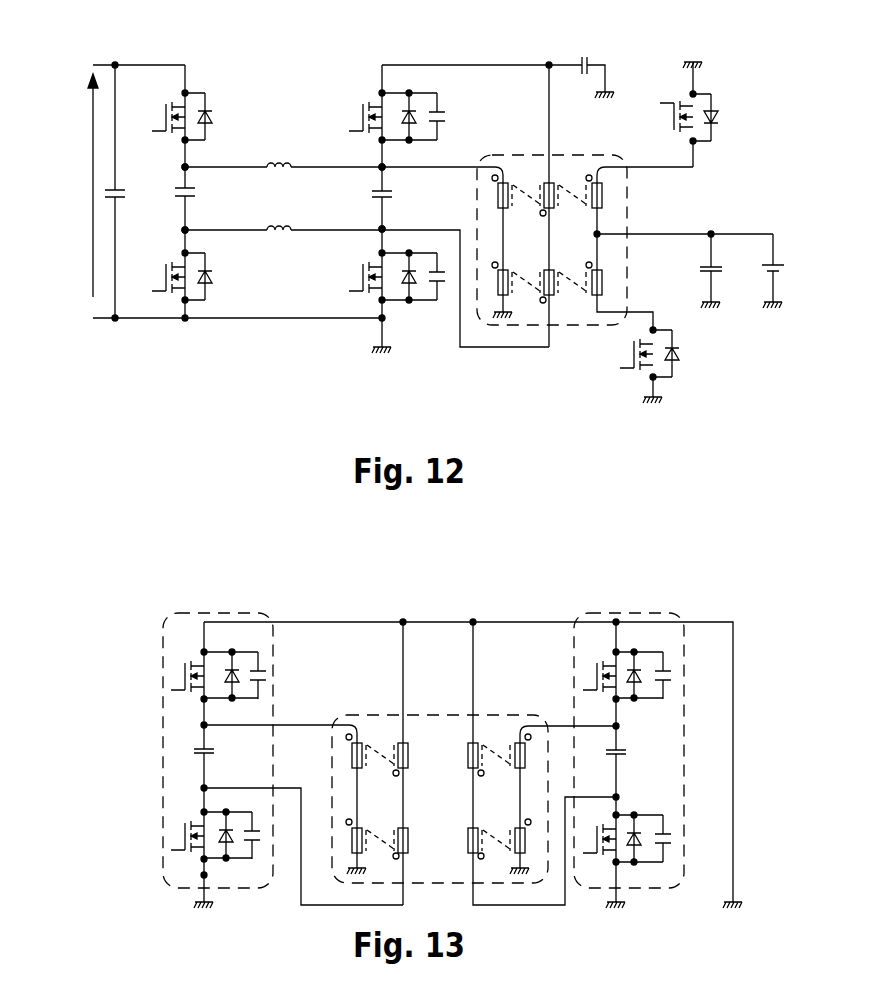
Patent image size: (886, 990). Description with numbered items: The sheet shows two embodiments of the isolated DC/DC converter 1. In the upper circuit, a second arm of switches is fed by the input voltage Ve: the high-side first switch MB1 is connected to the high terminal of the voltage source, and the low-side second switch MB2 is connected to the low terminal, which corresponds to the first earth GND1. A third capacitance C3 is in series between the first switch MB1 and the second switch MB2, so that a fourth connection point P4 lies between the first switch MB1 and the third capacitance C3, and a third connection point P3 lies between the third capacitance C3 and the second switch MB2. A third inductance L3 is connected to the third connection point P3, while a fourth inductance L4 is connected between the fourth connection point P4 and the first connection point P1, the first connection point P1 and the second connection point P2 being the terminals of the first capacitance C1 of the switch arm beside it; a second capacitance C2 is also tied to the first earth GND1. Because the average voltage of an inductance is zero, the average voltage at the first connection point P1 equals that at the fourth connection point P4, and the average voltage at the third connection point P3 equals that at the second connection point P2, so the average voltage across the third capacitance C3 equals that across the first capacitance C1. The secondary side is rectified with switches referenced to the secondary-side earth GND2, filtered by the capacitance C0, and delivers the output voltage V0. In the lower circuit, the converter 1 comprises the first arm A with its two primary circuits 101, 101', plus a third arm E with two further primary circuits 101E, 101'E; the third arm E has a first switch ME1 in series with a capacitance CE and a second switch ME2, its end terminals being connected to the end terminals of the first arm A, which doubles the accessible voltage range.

In FIG. 12, the isolated DC/DC converter 1 is at (71, 78).
In FIG. 13, the isolated DC/DC converter 1 is at (121, 660).
In FIG. 12, the first switch of the second arm MB1 is at (178, 80).
In FIG. 12, the second switch of the second arm MB2 is at (173, 314).
In FIG. 12, the input voltage Ve is at (79, 185).
In FIG. 12, the third capacitance C3 is at (169, 198).
In FIG. 12, the fourth connection point P4 is at (190, 166).
In FIG. 12, the fourth inductance L4 is at (283, 180).
In FIG. 12, the third connection point P3 is at (190, 226).
In FIG. 12, the third inductance L3 is at (367, 286).
In FIG. 12, the first connection point P1 is at (378, 166).
In FIG. 12, the second connection point P2 is at (380, 226).
In FIG. 12, the first capacitance C1 is at (394, 193).
In FIG. 12, the second capacitance C2 is at (584, 52).
In FIG. 12, the first earth GND1 is at (618, 94).
In FIG. 12, the secondary-side earth GND2 is at (700, 62).
In FIG. 12, the capacitance Co C0 is at (721, 268).
In FIG. 12, the output voltage V0 is at (783, 268).
In FIG. 13, the first arm A is at (212, 612).
In FIG. 13, the third arm E is at (626, 612).
In FIG. 13, the first switch of the third arm ME1 is at (656, 638).
In FIG. 13, the second switch of the third arm ME2 is at (662, 878).
In FIG. 13, the first primary circuit 101 is at (321, 793).
In FIG. 13, the second primary circuit 101' is at (384, 801).
In FIG. 13, the first supplementary primary circuit 101E is at (473, 798).
In FIG. 13, the second supplementary primary circuit 101'E is at (469, 793).
In FIG. 13, the capacitance of the third arm CE is at (629, 755).